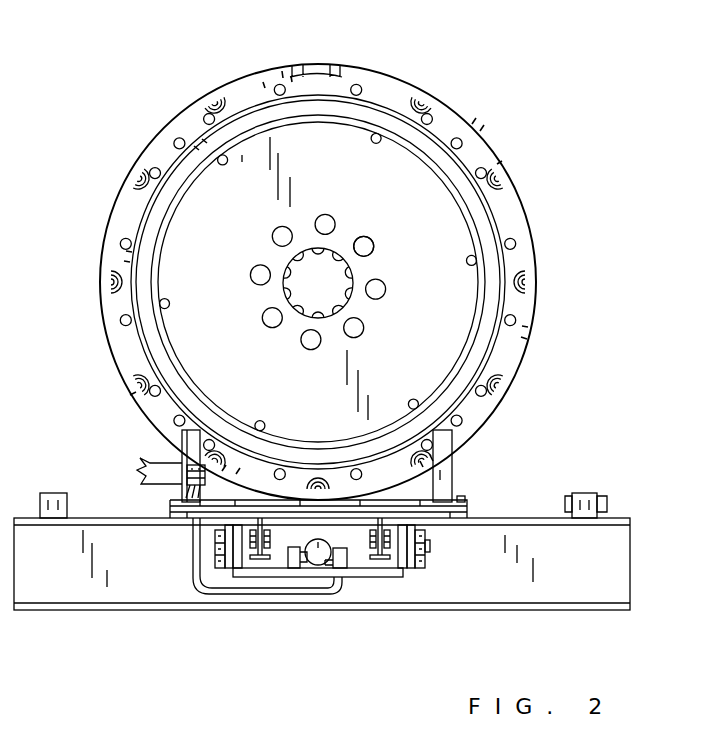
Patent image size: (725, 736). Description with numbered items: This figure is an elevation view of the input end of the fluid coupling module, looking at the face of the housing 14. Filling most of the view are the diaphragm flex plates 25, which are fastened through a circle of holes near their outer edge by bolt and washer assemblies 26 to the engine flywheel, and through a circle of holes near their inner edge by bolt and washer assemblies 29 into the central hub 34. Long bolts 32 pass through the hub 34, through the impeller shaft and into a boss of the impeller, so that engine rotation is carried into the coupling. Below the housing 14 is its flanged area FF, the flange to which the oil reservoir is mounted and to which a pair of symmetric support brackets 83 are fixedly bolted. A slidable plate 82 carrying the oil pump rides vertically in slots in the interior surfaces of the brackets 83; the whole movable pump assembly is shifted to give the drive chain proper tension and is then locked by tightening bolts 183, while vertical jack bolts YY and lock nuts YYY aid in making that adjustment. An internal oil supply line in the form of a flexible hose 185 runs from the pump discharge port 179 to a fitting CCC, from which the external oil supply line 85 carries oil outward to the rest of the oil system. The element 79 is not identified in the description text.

The housing 14 is at (537, 243).
The diaphragm flex plates 25 is at (457, 342).
The bolt and washer assemblies 26 is at (219, 156).
The bolt and washer assemblies 29 is at (370, 239).
The long bolts 32 is at (373, 243).
The hub 34 is at (312, 273).
The flanged area FF is at (470, 508).
The fitting CCC is at (178, 448).
The external oil supply line 85 is at (143, 460).
The flexible hose 185 is at (192, 578).
The support brackets 83 is at (232, 572).
The vertical jack bolts YY is at (257, 549).
The pump discharge port 179 is at (365, 565).
The lock nuts YYY is at (282, 560).
The pump 79 is at (312, 567).
The slidable plate 82 is at (333, 542).
The bolts 183 is at (425, 548).